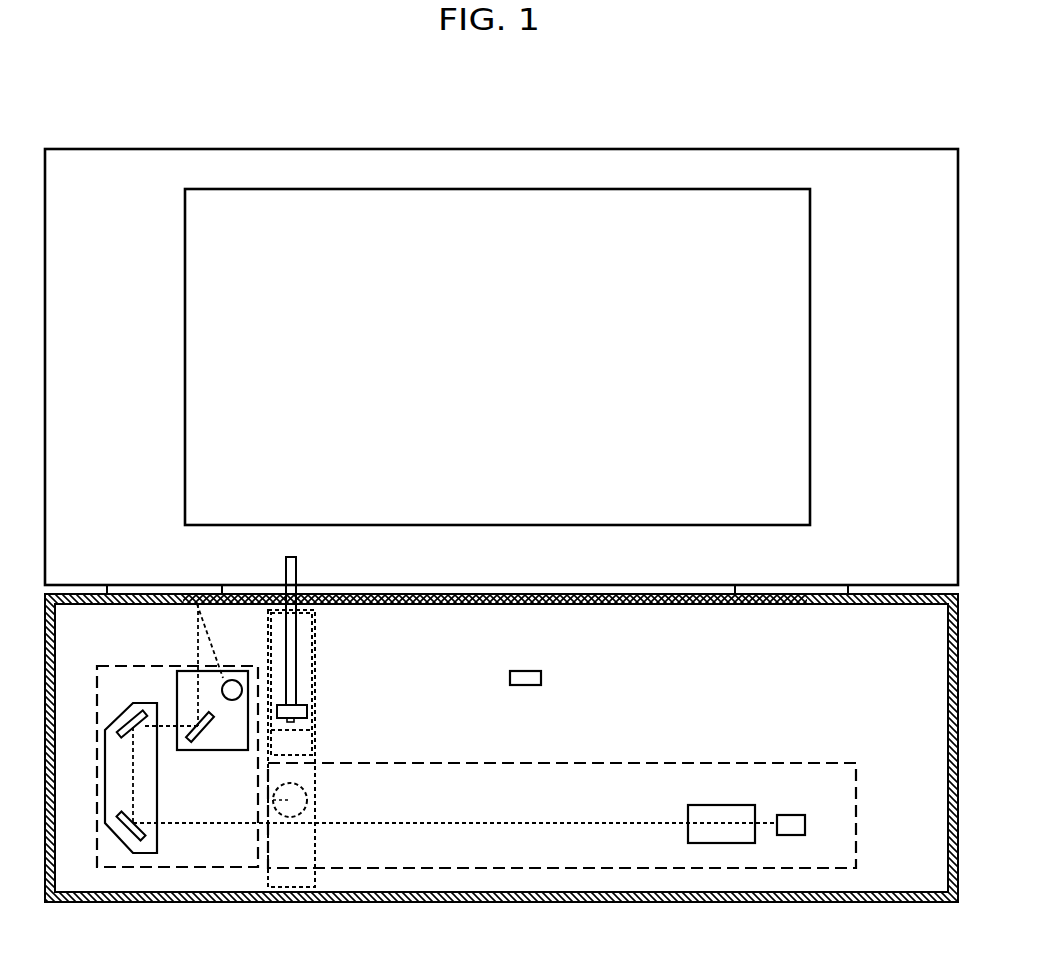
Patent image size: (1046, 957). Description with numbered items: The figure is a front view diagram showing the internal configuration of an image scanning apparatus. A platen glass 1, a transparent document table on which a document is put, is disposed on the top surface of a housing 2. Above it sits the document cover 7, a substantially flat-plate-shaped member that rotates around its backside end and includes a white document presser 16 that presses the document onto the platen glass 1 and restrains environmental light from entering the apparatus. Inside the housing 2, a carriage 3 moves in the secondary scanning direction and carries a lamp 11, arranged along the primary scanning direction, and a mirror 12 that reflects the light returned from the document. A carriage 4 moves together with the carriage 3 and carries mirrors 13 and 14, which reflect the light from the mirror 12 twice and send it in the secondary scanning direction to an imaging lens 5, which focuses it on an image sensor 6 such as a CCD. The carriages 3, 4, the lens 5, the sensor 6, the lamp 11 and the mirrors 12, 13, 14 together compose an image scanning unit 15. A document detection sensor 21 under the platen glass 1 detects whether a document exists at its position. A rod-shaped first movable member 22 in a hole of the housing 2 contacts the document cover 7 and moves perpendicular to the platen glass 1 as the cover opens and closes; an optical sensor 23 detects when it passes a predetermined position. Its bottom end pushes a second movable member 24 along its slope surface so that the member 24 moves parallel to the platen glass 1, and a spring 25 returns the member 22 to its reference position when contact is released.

The platen glass 1 is at (632, 600).
The housing 2 is at (857, 600).
The carriage 3 is at (184, 750).
The carriage 4 is at (105, 790).
The imaging lens 5 is at (715, 805).
The image sensor 6 is at (790, 815).
The document cover 7 is at (648, 149).
The lamp 11 is at (228, 700).
The mirror 12 is at (200, 740).
The mirror 13 is at (121, 722).
The mirror 14 is at (121, 836).
The image scanning unit 15 is at (828, 763).
The document presser 16 is at (810, 318).
The document detection sensor 21 is at (541, 675).
The first movable member 22 is at (296, 572).
The optical sensor 23 is at (307, 712).
The second movable member 24 is at (315, 745).
The spring 25 is at (309, 792).